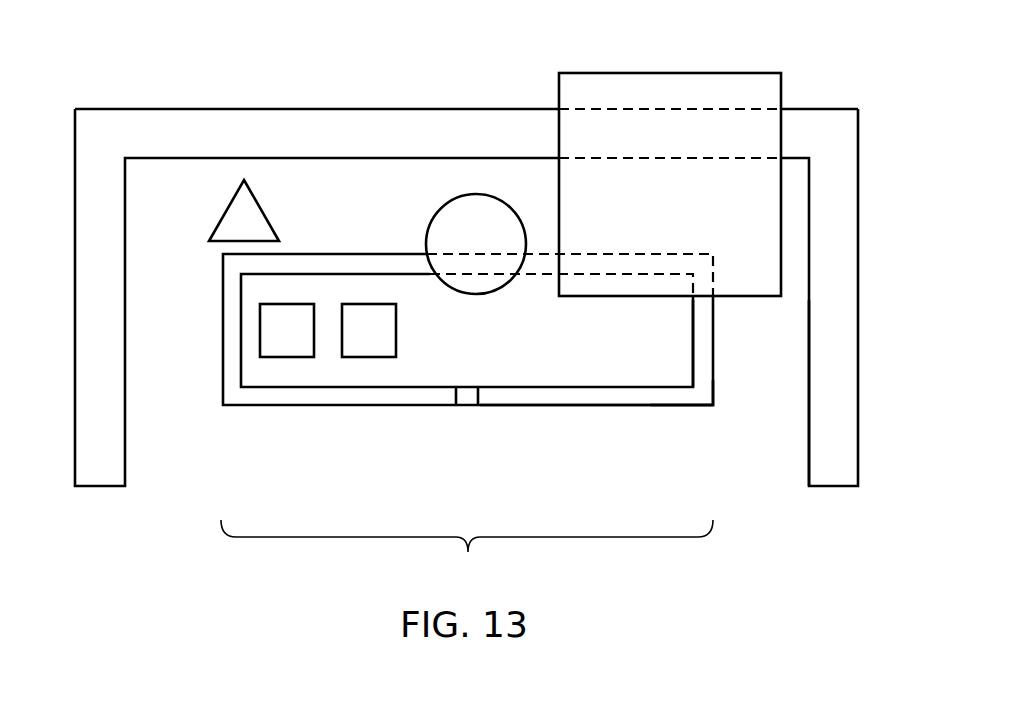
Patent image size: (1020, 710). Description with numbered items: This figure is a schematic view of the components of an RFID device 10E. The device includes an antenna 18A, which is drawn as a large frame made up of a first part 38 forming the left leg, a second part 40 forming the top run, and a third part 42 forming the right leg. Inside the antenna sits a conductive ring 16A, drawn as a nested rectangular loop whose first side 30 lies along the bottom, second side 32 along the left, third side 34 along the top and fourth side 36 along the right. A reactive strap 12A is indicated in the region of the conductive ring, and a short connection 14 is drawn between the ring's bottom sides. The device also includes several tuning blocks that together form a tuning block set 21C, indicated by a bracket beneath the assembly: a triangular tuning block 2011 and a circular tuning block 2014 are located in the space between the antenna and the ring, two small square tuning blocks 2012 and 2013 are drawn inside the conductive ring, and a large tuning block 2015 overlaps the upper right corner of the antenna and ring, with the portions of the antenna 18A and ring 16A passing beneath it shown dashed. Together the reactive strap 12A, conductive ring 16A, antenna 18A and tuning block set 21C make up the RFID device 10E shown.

The RFID device 10E is at (452, 109).
The second part 40 is at (200, 127).
The first part 38 is at (96, 375).
The antenna 18A is at (838, 257).
The third part 42 is at (838, 375).
The tuning block 2015 is at (665, 90).
The tuning block 2011 is at (255, 212).
The tuning block 2014 is at (461, 212).
The second side 32 is at (227, 375).
The third side 34 is at (355, 265).
The fourth side 36 is at (705, 343).
The tuning block 2012 is at (273, 348).
The tuning block 2013 is at (366, 348).
The connector 14 is at (463, 407).
The first side 30 is at (514, 395).
The conductive ring 16A is at (675, 395).
The reactive strap 12A is at (592, 428).
The tuning block set 21C is at (467, 552).